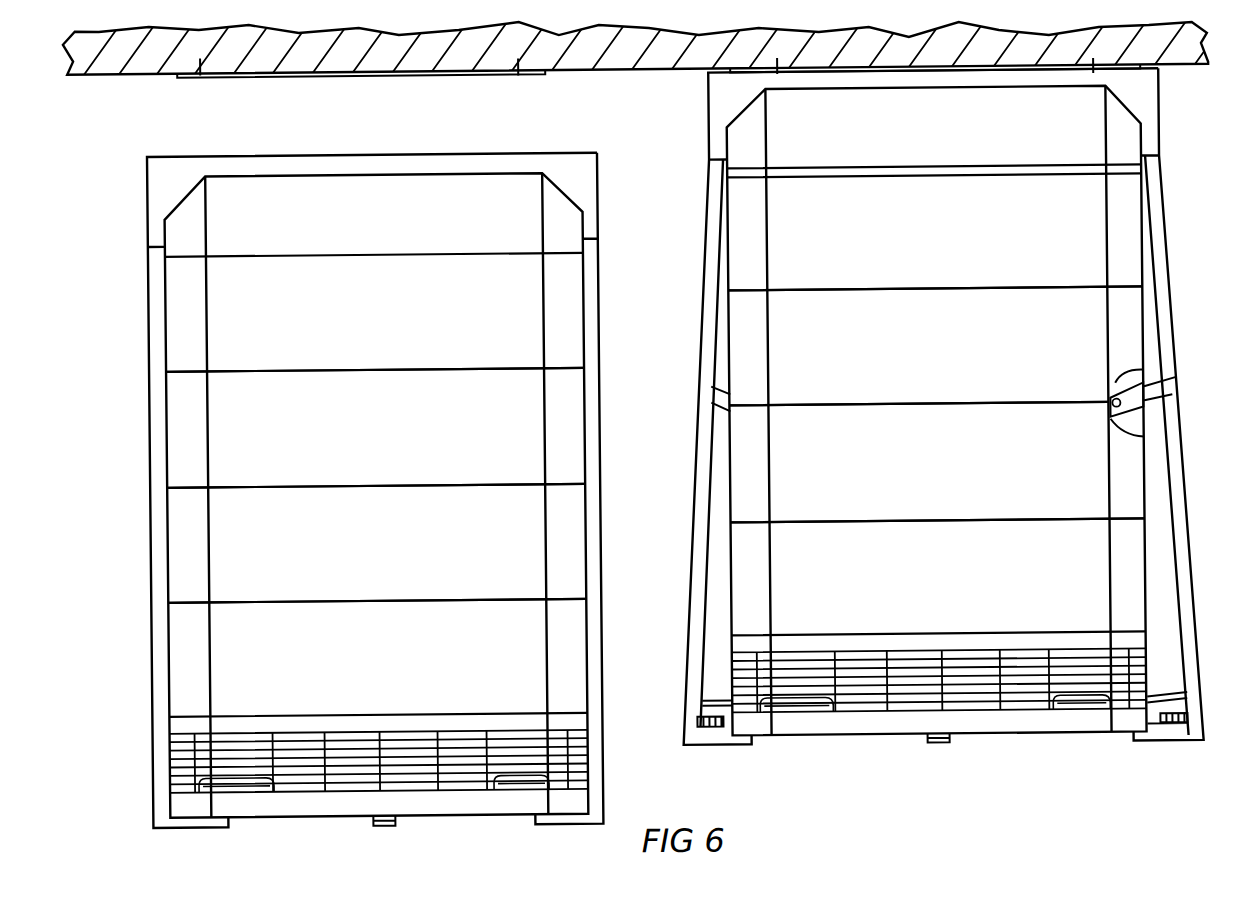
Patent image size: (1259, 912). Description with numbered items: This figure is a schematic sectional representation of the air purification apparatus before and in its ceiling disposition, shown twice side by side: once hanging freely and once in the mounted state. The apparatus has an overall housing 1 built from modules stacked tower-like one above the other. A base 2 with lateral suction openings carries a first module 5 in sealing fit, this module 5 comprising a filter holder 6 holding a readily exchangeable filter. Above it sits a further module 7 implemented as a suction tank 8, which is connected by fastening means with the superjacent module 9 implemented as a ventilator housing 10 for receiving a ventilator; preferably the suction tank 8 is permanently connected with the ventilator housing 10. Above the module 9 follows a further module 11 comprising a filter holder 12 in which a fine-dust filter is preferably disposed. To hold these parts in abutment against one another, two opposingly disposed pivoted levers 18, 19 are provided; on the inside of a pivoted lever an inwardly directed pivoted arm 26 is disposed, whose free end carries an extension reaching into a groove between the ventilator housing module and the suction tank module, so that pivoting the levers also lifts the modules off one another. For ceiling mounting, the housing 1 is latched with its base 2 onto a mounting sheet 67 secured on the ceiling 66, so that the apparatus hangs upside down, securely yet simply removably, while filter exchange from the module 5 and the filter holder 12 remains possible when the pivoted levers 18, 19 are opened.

The overall housing 1 is at (760, 92).
The base 2 is at (803, 131).
The first module 5 is at (803, 571).
The filter holder 6 is at (658, 673).
The further module 7 is at (789, 454).
The suction tank 8 is at (657, 560).
The module 9 is at (507, 444).
The ventilator housing 10 is at (637, 445).
The further module 11 is at (799, 234).
The filter holder 12 is at (654, 328).
The pivoted lever 18 is at (150, 518).
The pivoted lever 19 is at (594, 465).
The pivoted arm 26 is at (1148, 395).
The ceiling 66 is at (138, 63).
The mounting sheet 67 is at (283, 76).